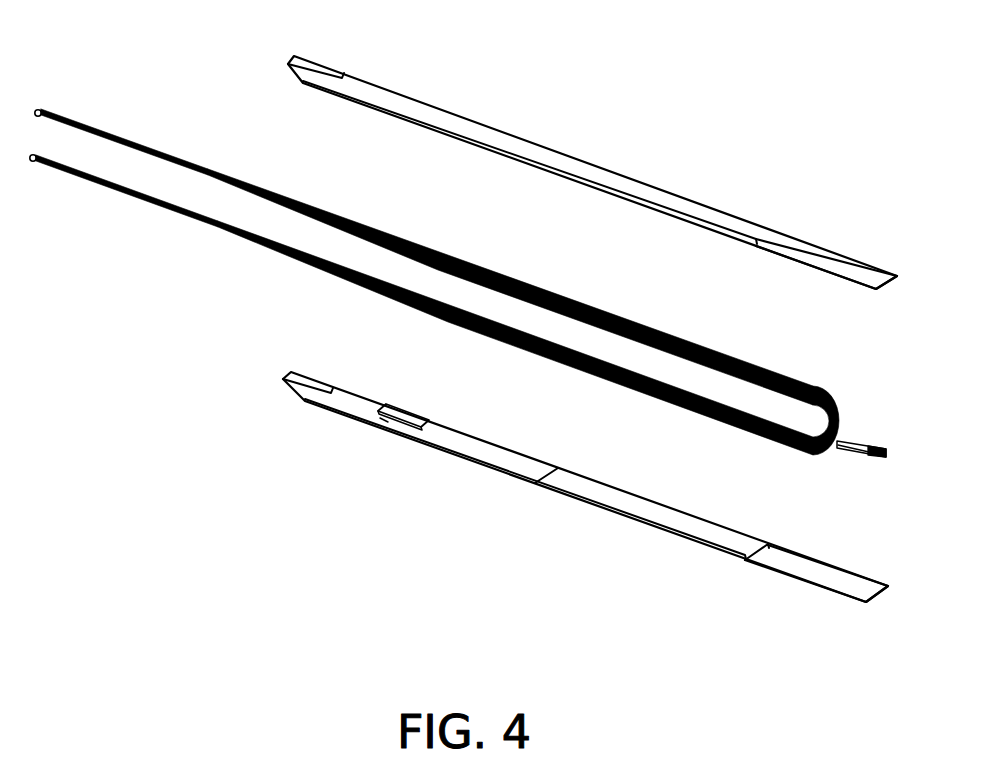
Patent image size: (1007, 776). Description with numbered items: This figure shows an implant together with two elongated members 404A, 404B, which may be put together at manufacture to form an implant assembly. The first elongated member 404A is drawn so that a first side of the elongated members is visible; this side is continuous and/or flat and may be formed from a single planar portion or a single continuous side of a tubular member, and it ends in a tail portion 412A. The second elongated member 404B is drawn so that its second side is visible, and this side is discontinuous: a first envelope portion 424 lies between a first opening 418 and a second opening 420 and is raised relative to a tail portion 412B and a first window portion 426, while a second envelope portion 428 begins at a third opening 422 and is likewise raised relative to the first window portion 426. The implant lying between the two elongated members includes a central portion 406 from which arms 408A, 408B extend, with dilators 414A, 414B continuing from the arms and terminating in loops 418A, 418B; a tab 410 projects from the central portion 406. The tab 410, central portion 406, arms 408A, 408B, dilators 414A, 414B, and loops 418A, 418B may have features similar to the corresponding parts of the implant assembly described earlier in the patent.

The first elongated member 404A is at (484, 122).
The second elongated member 404B is at (496, 488).
The central portion 406 is at (840, 392).
The first arm 408A is at (536, 283).
The second arm 408B is at (492, 334).
The tab 410 is at (874, 439).
The tail portion of first elongated member 412A is at (800, 238).
The tail portion 412B is at (802, 563).
The first dilator 414A is at (165, 147).
The second dilator 414B is at (212, 224).
The first loop 418A is at (34, 101).
The second loop 418B is at (27, 156).
The first opening 418 is at (748, 555).
The second opening 420 is at (541, 472).
The third opening 422 is at (418, 422).
The first envelope portion 424 is at (678, 520).
The first window portion 426 is at (497, 447).
The second envelope portion 428 is at (375, 416).